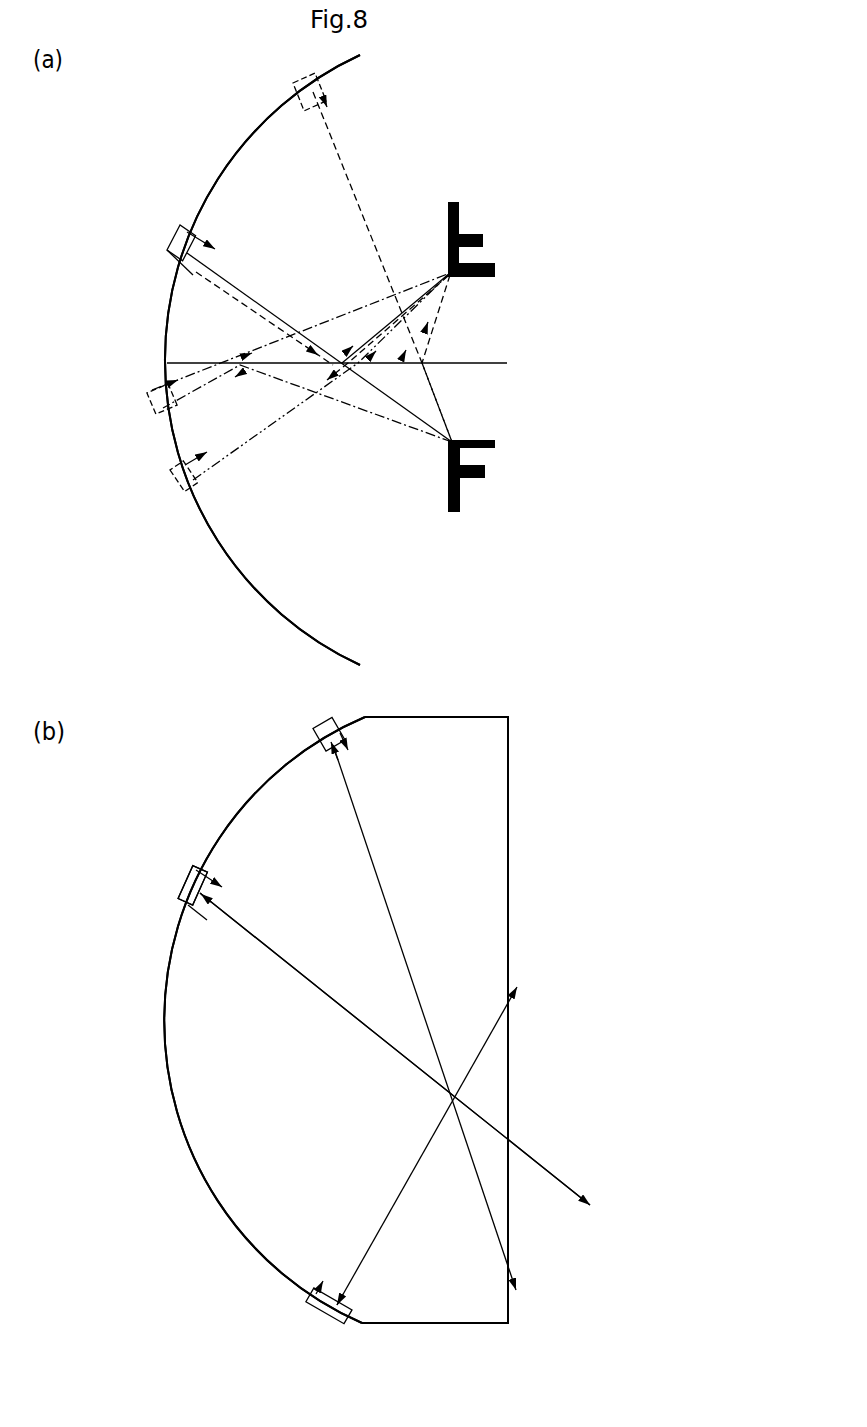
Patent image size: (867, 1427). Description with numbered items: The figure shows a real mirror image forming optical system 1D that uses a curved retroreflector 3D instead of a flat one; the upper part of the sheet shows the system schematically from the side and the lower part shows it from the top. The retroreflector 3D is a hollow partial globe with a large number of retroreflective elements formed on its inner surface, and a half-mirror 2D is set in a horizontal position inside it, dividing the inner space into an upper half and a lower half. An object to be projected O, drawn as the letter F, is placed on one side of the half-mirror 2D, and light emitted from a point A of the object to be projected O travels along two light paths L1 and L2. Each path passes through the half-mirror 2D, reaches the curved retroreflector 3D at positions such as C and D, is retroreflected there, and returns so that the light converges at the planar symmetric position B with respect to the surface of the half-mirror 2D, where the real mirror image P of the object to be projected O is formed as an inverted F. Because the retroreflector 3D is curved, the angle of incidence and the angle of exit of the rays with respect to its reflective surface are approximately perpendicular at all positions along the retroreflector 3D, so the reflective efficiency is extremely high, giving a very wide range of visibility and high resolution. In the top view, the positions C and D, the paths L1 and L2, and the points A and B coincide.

The real mirror image forming optical system 1D is at (456, 106).
The half-mirror 2D is at (491, 361).
The curved retroreflector 3D is at (251, 150).
The real mirror image P is at (490, 198).
The object to be projected O is at (484, 524).
The point of the object to be projected A is at (450, 444).
The planar symmetric position B is at (450, 271).
The position on the retroreflector C is at (181, 572).
The position on the retroreflector D is at (178, 678).
The light path L1 is at (388, 729).
The light path L2 is at (391, 739).